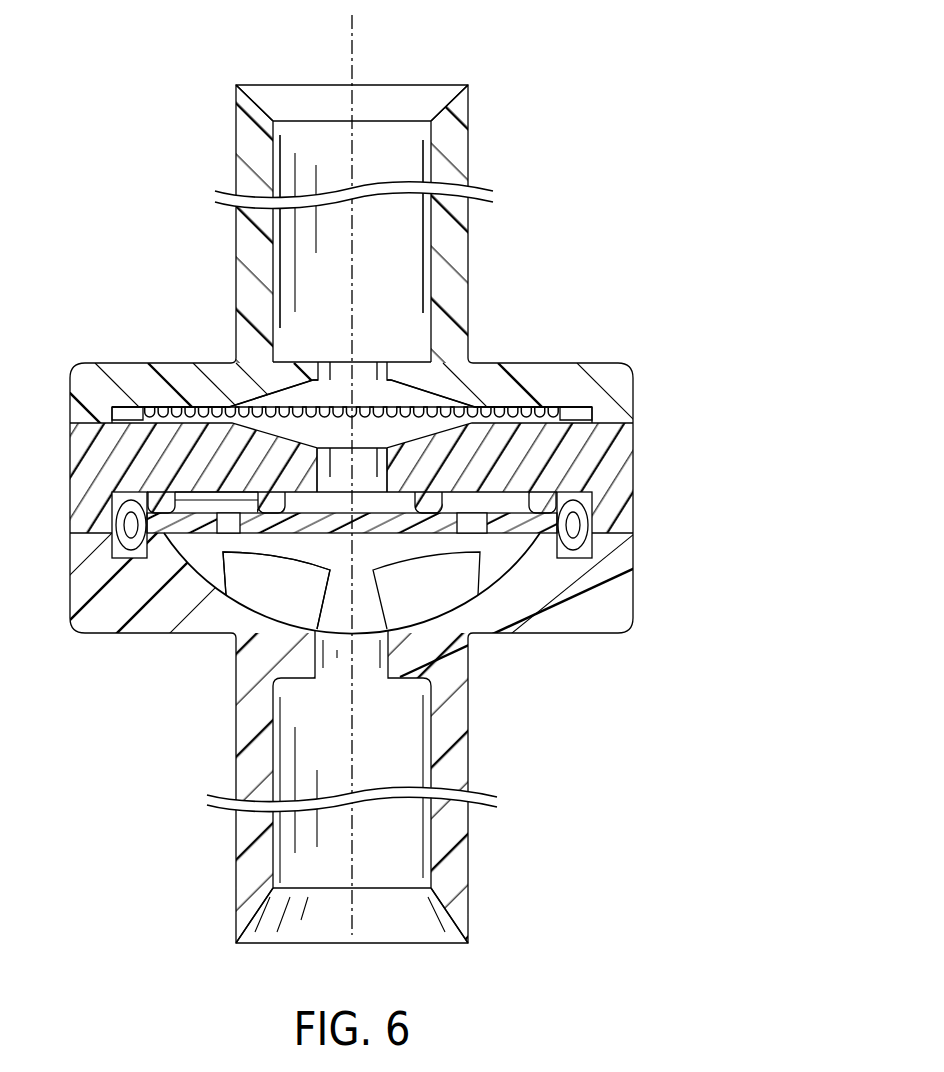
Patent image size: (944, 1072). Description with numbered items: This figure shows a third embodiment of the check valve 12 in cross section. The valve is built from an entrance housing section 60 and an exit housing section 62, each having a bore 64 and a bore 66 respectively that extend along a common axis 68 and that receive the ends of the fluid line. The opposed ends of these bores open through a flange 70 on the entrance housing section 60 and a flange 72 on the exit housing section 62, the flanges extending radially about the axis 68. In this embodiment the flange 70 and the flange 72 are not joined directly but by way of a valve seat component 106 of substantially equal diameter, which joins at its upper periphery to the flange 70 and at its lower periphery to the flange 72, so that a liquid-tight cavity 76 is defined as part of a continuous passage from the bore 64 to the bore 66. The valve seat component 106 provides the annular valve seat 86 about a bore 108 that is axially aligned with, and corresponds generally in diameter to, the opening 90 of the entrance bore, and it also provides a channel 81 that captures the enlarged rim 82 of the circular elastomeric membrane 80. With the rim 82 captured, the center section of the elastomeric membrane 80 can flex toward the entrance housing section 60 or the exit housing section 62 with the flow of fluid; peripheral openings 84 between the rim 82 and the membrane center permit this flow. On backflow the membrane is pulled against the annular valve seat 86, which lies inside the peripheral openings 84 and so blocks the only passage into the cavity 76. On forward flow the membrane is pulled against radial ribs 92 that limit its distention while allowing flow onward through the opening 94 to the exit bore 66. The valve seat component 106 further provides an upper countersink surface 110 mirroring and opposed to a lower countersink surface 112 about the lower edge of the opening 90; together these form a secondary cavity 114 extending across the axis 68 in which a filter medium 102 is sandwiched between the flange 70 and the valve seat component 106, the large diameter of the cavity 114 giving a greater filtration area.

The check valve 12 is at (521, 99).
The entrance housing section 60 is at (468, 152).
The exit housing section 62 is at (470, 863).
The bore 64 is at (431, 128).
The bore 66 is at (431, 847).
The common axis 68 is at (352, 57).
The flange 70 is at (633, 363).
The flange 72 is at (632, 630).
The cavity 76 is at (495, 567).
The elastomeric membrane 80 is at (515, 512).
The channel 81 is at (113, 527).
The rim 82 is at (600, 500).
The peripheral openings 84 is at (292, 608).
The annular valve seat 86 is at (260, 495).
The opening 90 is at (333, 360).
The radial ribs 92 is at (317, 633).
The opening 94 is at (388, 656).
The filter medium 102 is at (368, 385).
The valve seat component 106 is at (623, 438).
The bore 108 is at (333, 462).
The upper countersink surface 110 is at (417, 398).
The lower countersink surface 112 is at (393, 395).
The secondary cavity 114 is at (373, 403).